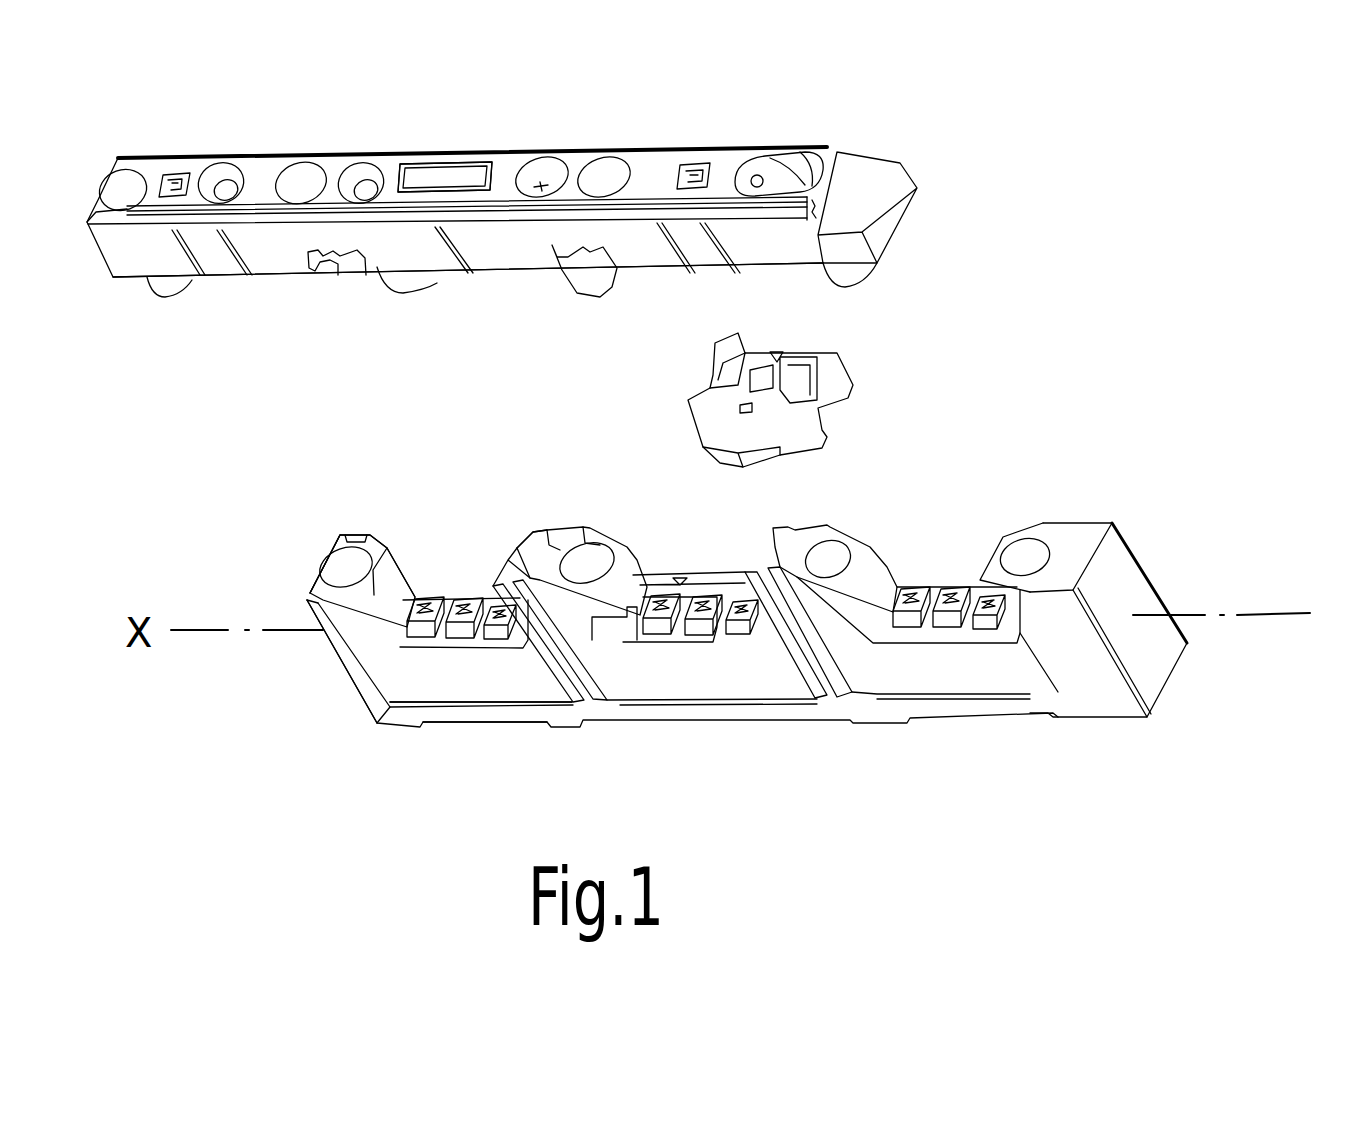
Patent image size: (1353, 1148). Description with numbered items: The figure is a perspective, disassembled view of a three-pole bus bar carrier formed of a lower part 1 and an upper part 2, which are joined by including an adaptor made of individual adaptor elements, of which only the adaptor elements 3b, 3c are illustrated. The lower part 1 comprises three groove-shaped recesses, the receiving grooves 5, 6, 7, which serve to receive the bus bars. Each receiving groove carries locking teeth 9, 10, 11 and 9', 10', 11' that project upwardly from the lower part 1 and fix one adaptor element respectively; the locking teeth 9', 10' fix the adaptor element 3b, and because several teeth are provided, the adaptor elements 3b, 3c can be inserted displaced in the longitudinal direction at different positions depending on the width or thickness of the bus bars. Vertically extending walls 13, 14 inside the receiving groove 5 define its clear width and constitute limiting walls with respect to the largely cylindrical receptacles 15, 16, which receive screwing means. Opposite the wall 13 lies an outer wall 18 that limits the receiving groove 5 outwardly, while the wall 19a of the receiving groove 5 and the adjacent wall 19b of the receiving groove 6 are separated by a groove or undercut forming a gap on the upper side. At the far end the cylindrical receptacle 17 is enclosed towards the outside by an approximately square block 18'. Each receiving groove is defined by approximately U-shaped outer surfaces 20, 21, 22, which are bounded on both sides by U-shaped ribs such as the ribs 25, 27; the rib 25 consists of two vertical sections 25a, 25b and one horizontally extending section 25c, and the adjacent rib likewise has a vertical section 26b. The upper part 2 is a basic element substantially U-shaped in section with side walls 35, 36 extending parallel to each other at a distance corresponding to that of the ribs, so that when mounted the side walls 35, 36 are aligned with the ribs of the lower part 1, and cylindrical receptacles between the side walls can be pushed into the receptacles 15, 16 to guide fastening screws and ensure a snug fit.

The lower part 1 is at (972, 727).
The upper part 2 is at (818, 132).
The adaptor element 3b is at (693, 577).
The adaptor element 3c is at (847, 370).
The receiving groove 5 is at (447, 570).
The receiving groove 6 is at (717, 560).
The receiving groove 7 is at (943, 557).
The locking tooth 9 is at (418, 684).
The locking tooth 10 is at (459, 685).
The locking tooth 11 is at (510, 689).
The locking tooth 9' is at (666, 683).
The locking tooth 10' is at (710, 684).
The locking tooth 11' is at (754, 686).
The wall 13 is at (387, 577).
The wall 14 is at (497, 560).
The cylindrical receptacle 15 is at (347, 567).
The cylindrical receptacle 16 is at (523, 557).
The cylindrical receptacle 17 is at (1023, 555).
The outer wall 18 is at (306, 564).
The square block 18' is at (1108, 587).
The wall 19a is at (543, 537).
The wall 19b is at (580, 530).
The U-shaped outer surface 20 is at (485, 684).
The U-shaped outer surface 21 is at (779, 681).
The U-shaped outer surface 22 is at (958, 674).
The rib 25 is at (353, 660).
The vertical section 25a is at (377, 707).
The vertical section 25b is at (562, 673).
The horizontally extending section 25c is at (488, 727).
The vertical section 26b is at (597, 663).
The rib 27 is at (837, 660).
The side wall 35 is at (518, 247).
The side wall 36 is at (560, 152).